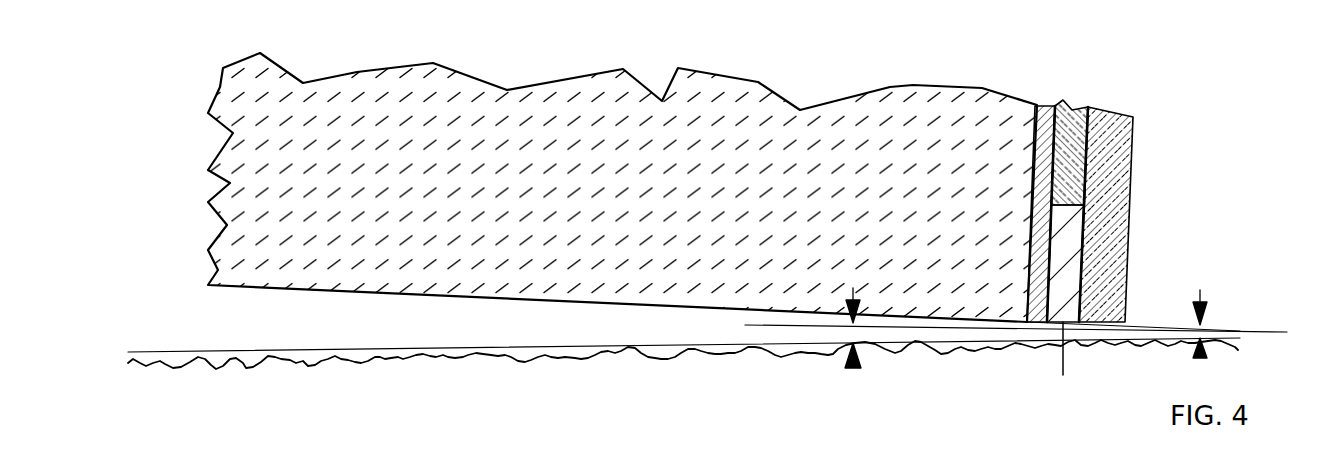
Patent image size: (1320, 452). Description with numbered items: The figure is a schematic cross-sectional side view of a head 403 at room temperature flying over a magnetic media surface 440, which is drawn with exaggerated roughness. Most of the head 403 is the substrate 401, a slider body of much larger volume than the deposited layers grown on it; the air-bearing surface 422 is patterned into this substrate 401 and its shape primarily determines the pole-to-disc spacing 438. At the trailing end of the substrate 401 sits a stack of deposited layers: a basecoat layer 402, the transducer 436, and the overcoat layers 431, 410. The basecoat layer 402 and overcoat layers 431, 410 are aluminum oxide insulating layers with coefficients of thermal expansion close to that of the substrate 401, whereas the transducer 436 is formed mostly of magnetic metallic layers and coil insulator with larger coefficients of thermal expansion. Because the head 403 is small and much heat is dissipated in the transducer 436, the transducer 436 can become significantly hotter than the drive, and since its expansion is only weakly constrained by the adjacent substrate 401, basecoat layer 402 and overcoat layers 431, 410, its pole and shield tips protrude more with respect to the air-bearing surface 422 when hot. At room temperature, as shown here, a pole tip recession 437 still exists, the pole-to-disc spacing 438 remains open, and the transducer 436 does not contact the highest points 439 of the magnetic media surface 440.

The substrate 401 is at (642, 210).
The basecoat layer 402 is at (1047, 105).
The head 403 is at (538, 55).
The overcoat layer 410 is at (1115, 113).
The air-bearing surface 422 is at (965, 325).
The overcoat layer 431 is at (1073, 108).
The transducer 436 is at (1063, 375).
The pole tip recession 437 is at (1200, 358).
The pole-to-disc spacing 438 is at (853, 368).
The highest points 439 is at (480, 322).
The magnetic media surface 440 is at (847, 350).